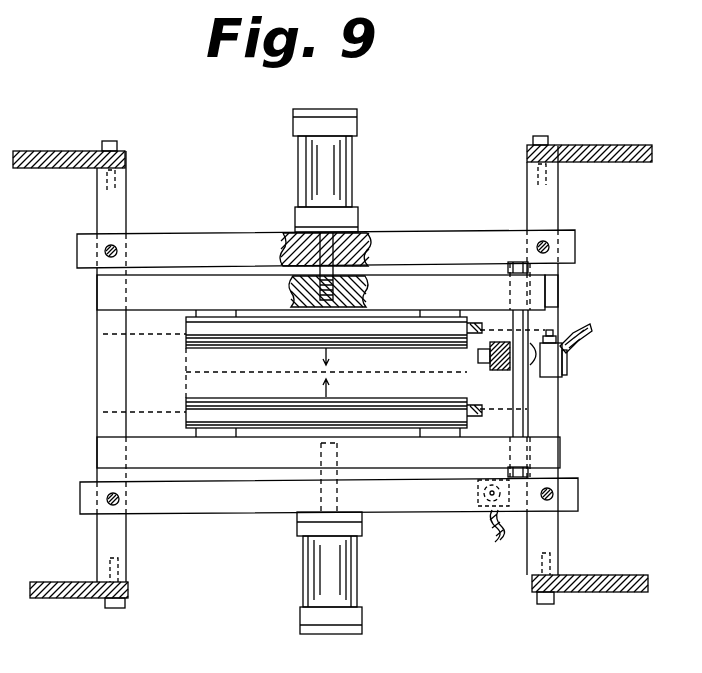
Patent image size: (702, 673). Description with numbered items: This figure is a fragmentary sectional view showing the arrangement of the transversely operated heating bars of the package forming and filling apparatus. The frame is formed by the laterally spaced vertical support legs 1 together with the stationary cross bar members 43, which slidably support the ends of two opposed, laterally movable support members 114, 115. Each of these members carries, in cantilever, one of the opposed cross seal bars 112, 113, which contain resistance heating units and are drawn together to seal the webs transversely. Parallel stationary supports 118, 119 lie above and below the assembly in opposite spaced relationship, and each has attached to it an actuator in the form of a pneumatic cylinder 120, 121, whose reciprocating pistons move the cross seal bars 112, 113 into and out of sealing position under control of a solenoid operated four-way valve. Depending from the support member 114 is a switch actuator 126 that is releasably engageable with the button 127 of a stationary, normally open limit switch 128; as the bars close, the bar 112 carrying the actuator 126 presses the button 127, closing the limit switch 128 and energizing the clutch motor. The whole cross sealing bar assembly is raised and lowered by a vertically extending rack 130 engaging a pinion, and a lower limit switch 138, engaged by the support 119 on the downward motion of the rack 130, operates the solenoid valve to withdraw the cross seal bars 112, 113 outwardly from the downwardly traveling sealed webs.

The vertical support legs 1 is at (33, 150).
The cross bar members 43 is at (113, 207).
The cross seal bar 112 is at (186, 347).
The cross seal bar 113 is at (198, 415).
The support member 114 is at (216, 299).
The support member 115 is at (220, 464).
The stationary support 118 is at (256, 222).
The stationary support 119 is at (193, 503).
The pneumatic cylinder 120 is at (333, 163).
The pneumatic cylinder 121 is at (320, 557).
The switch actuator 126 is at (556, 308).
The button 127 is at (550, 331).
The limit switch 128 is at (548, 361).
The rack 130 is at (488, 361).
The lower limit switch 138 is at (479, 499).